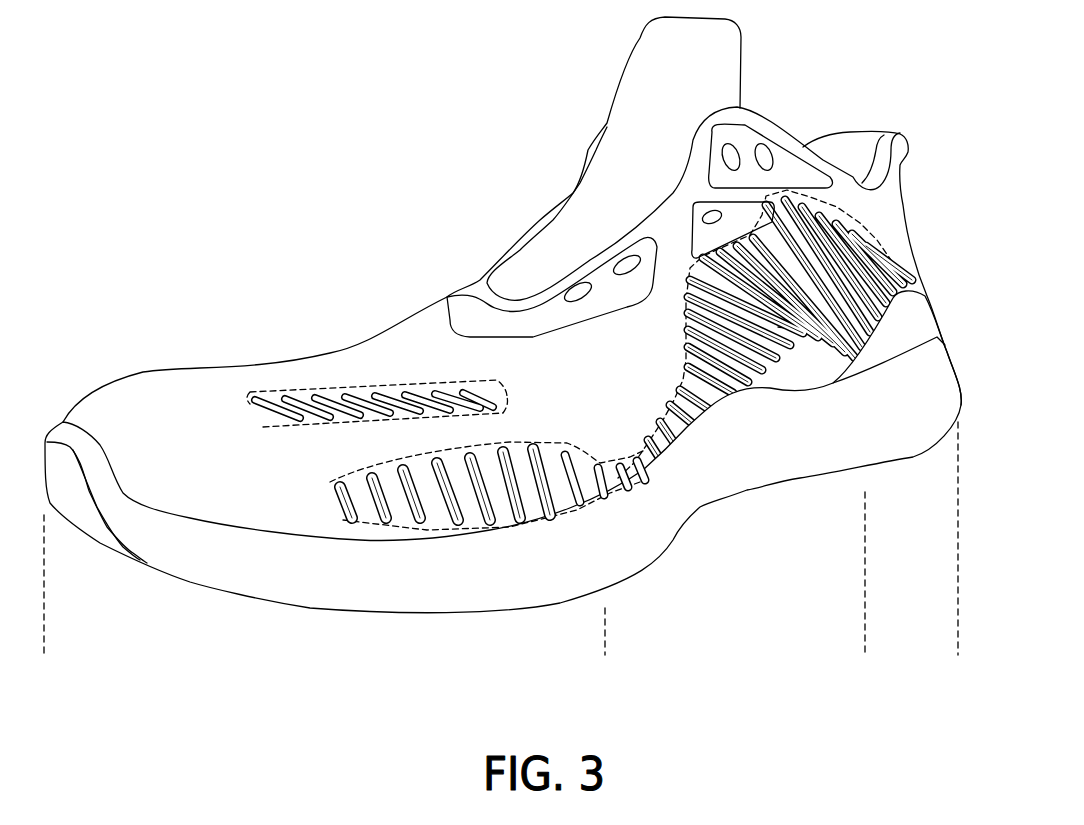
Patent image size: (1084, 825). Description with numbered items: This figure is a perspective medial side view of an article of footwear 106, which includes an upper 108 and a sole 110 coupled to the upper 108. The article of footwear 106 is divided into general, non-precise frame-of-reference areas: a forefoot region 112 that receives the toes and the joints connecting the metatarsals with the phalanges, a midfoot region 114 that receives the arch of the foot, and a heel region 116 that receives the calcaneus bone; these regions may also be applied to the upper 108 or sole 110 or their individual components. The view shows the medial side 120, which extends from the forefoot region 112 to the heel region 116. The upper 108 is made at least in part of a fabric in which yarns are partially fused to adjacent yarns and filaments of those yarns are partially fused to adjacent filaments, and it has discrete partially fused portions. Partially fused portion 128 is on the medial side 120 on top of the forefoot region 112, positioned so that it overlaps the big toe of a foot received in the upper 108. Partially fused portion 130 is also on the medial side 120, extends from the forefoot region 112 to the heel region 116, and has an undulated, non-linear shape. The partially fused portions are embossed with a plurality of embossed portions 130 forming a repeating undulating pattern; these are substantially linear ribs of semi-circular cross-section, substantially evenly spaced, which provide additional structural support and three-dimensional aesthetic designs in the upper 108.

The article of footwear 106 is at (422, 112).
The upper 108 is at (417, 333).
The sole 110 is at (907, 443).
The forefoot region 112 is at (44, 665).
The midfoot region 114 is at (605, 665).
The heel region 116 is at (865, 665).
The medial side 120 is at (615, 417).
The partially fused portion 128 is at (247, 400).
The partially fused portion 130 is at (387, 393).